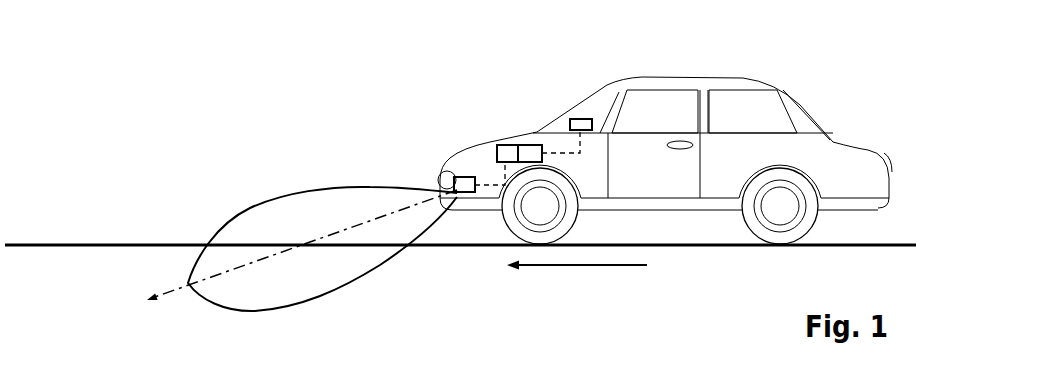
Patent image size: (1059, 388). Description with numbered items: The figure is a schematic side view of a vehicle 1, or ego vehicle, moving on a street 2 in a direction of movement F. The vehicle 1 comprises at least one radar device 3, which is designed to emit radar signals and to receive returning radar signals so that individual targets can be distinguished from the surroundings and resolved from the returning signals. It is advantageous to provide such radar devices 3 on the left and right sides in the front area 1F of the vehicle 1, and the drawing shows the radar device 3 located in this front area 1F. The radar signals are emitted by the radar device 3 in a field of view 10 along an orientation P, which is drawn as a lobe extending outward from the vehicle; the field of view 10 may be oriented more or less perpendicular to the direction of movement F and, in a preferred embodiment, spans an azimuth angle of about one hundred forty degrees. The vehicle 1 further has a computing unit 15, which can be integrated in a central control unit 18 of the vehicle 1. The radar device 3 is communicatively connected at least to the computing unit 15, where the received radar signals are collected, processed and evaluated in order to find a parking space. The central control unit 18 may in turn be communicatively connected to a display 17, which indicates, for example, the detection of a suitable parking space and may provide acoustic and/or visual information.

The vehicle 1 is at (673, 55).
The front area 1F is at (432, 171).
The street 2 is at (863, 247).
The radar device 3 is at (470, 177).
The field of view 10 is at (270, 220).
The computing unit 15 is at (507, 145).
The display 17 is at (579, 119).
The central control unit 18 is at (531, 136).
The orientation P is at (353, 223).
The direction of movement F is at (612, 266).